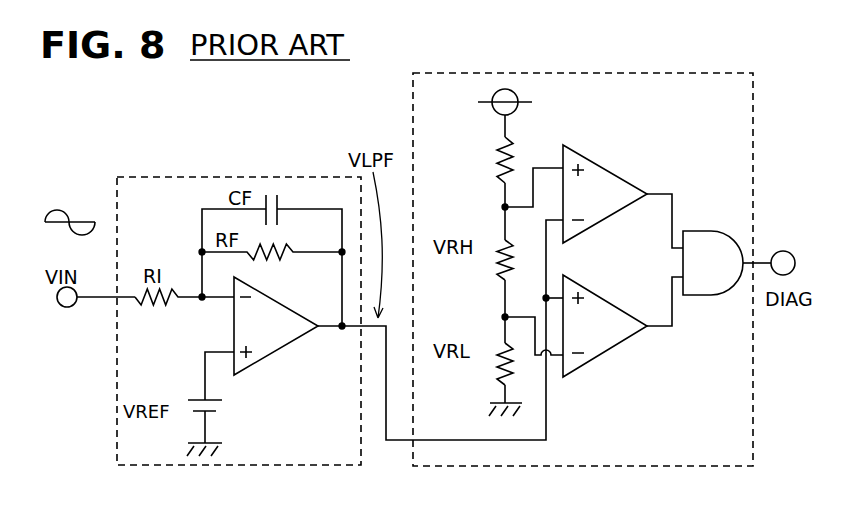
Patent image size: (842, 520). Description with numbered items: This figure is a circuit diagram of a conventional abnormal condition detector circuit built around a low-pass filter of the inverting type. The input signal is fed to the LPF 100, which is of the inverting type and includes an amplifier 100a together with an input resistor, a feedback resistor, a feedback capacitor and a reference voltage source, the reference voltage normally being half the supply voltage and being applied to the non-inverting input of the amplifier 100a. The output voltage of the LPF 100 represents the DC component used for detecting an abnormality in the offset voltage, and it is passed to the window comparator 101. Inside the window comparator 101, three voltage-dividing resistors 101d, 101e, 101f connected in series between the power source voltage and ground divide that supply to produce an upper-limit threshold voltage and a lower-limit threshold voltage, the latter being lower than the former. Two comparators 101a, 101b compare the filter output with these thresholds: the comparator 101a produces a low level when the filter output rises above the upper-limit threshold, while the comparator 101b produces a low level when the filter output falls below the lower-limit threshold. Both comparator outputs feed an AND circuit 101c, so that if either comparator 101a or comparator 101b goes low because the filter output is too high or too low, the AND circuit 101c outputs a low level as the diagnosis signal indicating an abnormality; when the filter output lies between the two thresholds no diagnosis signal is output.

The LPF 100 is at (217, 177).
The amplifier 100a is at (312, 291).
The window comparator 101 is at (650, 73).
The comparator 101a is at (608, 170).
The comparator 101b is at (616, 346).
The AND circuit 101c is at (695, 230).
The voltage-dividing resistor 101d is at (497, 165).
The voltage-dividing resistor 101e is at (497, 270).
The voltage-dividing resistor 101f is at (497, 373).